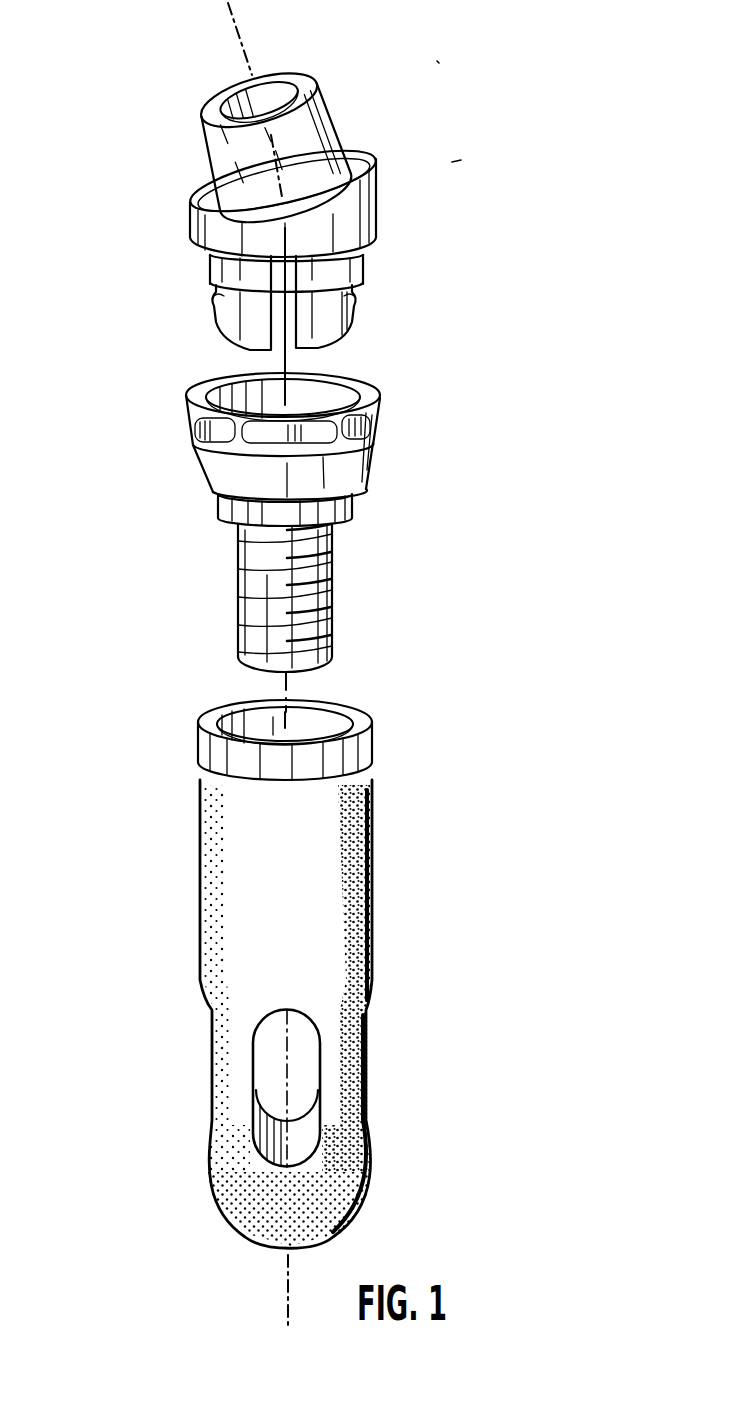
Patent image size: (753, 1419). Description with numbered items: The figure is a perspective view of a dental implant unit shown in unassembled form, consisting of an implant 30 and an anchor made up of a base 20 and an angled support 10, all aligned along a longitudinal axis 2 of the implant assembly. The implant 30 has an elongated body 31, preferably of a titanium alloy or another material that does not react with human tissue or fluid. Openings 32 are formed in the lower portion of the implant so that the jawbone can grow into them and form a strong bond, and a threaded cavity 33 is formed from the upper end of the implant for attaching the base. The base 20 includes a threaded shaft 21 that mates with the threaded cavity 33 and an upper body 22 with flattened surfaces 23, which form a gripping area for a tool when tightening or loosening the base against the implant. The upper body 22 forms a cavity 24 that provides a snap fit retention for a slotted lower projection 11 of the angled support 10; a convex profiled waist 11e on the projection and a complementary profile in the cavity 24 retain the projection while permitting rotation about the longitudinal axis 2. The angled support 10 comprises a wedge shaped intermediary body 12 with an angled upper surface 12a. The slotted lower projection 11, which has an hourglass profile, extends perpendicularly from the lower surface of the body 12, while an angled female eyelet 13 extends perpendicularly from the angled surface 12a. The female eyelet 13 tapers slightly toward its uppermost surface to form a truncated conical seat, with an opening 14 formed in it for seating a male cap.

The longitudinal axis 2 is at (220, 11).
The angled support 10 is at (158, 217).
The slotted lower projection 11 is at (332, 307).
The convex profiled waist 11e is at (210, 302).
The wedge shaped intermediary body 12 is at (357, 222).
The angled upper surface 12a is at (363, 147).
The angled female eyelet 13 is at (340, 122).
The opening 14 is at (277, 97).
The base 20 is at (213, 553).
The threaded shaft 21 is at (330, 613).
The upper body 22 is at (363, 475).
The flattened surfaces 23 is at (380, 413).
The cavity 24 is at (317, 403).
The implant 30 is at (159, 967).
The elongated body 31 is at (372, 873).
The openings 32 is at (267, 1056).
The threaded cavity 33 is at (320, 727).